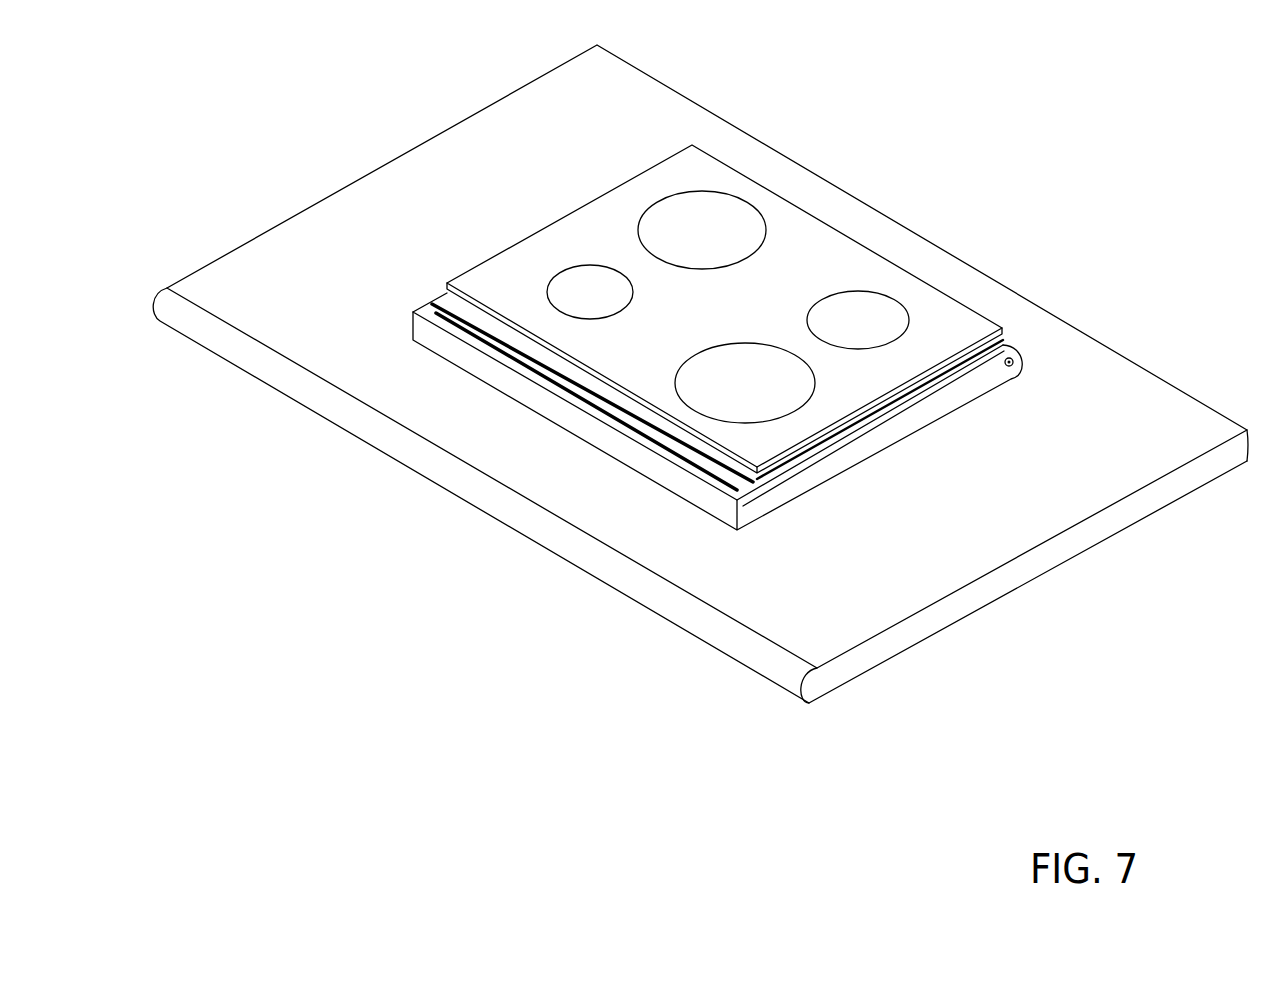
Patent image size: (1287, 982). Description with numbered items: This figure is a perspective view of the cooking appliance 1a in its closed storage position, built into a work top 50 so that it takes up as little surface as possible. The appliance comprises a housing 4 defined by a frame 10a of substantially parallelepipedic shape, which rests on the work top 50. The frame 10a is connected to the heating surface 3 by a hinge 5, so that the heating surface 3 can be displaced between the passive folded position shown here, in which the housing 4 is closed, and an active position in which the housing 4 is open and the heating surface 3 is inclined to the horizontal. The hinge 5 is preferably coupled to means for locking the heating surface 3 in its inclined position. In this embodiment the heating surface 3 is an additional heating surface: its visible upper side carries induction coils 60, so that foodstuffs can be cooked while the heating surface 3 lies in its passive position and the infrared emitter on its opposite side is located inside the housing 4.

The cooking appliance 1a is at (763, 333).
The heating surface 3 is at (847, 373).
The housing 4 is at (797, 471).
The hinge 5 is at (1014, 366).
The frame 10a is at (618, 445).
The work top 50 is at (320, 332).
The induction coil 60 is at (733, 230).